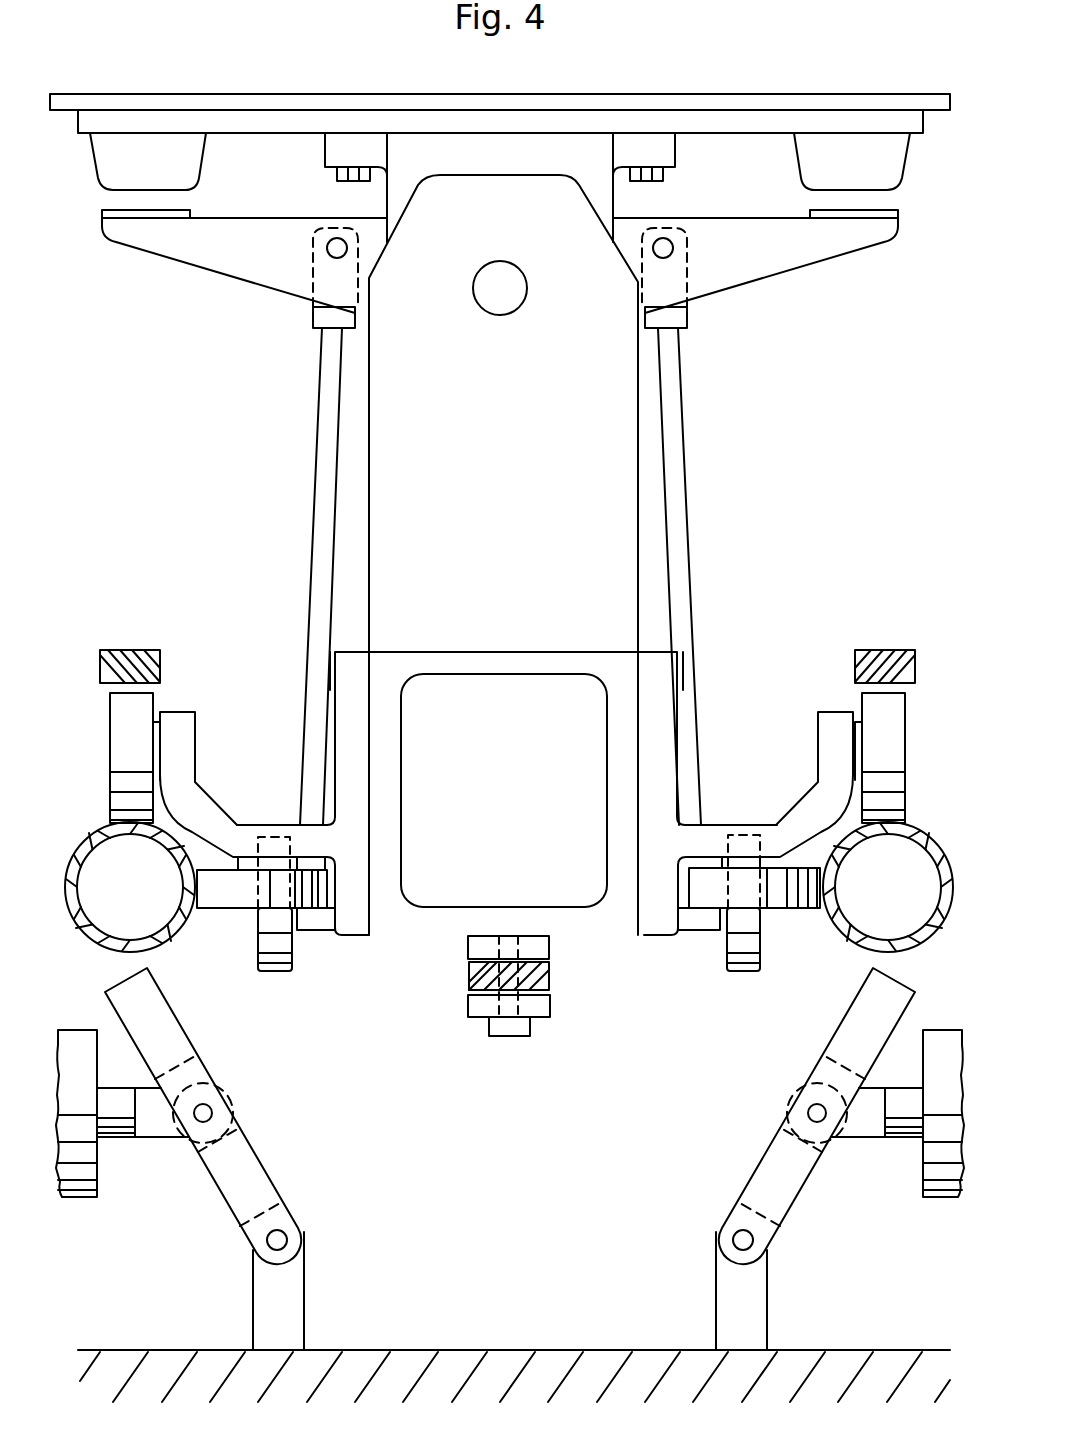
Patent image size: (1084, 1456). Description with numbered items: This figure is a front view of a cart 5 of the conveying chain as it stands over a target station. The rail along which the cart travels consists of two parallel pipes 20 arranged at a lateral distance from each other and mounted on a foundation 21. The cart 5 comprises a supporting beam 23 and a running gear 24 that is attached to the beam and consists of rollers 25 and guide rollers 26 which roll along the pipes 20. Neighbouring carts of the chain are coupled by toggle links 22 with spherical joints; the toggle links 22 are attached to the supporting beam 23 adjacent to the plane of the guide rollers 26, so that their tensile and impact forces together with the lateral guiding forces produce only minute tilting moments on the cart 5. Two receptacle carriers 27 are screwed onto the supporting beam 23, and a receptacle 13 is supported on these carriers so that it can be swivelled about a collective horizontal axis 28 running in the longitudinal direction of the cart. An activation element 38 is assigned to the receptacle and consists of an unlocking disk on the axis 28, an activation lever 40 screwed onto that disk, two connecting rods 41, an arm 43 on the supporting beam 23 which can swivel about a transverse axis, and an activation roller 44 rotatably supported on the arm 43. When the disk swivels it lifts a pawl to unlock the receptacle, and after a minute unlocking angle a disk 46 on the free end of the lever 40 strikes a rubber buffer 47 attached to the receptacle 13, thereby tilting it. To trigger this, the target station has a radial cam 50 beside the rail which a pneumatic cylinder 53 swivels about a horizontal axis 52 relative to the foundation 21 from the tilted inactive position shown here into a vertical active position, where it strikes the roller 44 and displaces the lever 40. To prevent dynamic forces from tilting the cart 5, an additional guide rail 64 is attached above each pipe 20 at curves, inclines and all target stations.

The cart 5 is at (417, 489).
The receptacle 13 is at (250, 105).
The pipes 20 is at (100, 945).
The foundation 21 is at (515, 1350).
The toggle links 22 is at (468, 978).
The supporting beam 23 is at (487, 660).
The running gear 24 is at (242, 727).
The rollers 25 is at (122, 730).
The guide rollers 26 is at (233, 897).
The receptacle carriers 27 is at (538, 205).
The horizontal axis 28 is at (488, 283).
The activation element 38 is at (723, 638).
The activation lever 40 is at (257, 267).
The connecting rods 41 is at (526, 576).
The arm 43 is at (318, 927).
The activation roller 44 is at (277, 955).
The disks 46 is at (176, 212).
The rubber buffer 47 is at (143, 148).
The radial cam 50 is at (167, 1030).
The horizontal axis 52 is at (283, 1237).
The pneumatic cylinder 53 is at (87, 1177).
The additional guide rail 64 is at (133, 663).